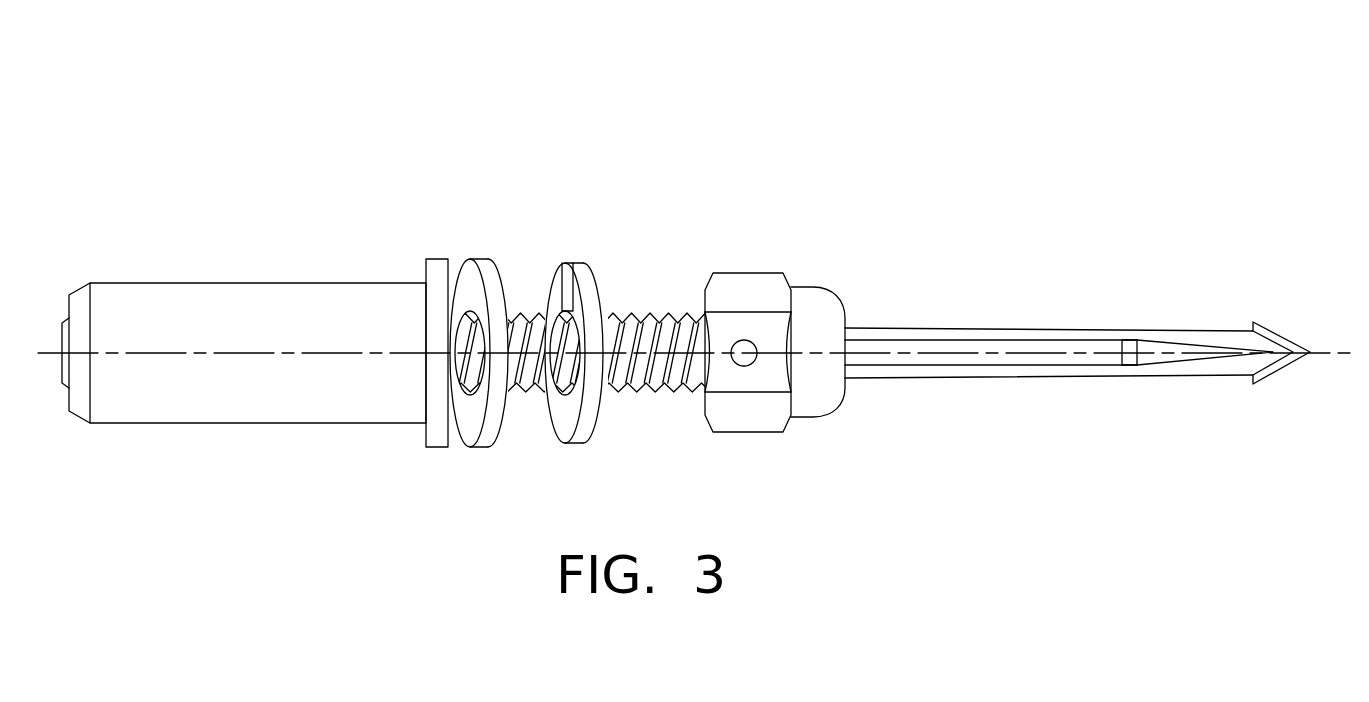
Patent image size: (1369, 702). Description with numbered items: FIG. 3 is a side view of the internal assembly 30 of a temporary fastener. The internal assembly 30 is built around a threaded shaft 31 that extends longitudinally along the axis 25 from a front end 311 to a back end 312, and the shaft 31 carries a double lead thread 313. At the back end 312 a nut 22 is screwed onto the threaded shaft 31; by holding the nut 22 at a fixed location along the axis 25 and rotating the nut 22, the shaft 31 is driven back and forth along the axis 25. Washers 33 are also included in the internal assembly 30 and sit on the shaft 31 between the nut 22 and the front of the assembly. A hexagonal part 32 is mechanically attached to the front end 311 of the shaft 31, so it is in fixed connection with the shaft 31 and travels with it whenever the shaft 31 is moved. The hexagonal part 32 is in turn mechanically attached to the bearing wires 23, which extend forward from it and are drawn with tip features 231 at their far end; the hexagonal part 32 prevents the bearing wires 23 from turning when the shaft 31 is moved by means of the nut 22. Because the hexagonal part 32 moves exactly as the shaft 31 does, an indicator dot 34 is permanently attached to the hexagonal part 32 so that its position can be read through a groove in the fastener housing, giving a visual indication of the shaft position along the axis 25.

The internal assembly 30 is at (306, 54).
The nut 22 is at (245, 302).
The back end 312 is at (63, 337).
The washers 33 is at (600, 262).
The threaded shaft 31 is at (660, 248).
The double lead thread 313 is at (643, 383).
The hexagonal part 32 is at (737, 272).
The indicator dot 34 is at (744, 340).
The front end 311 is at (848, 316).
The bearing wires 23 is at (965, 327).
The barbs 231 is at (1272, 326).
The axis 25 is at (1338, 350).